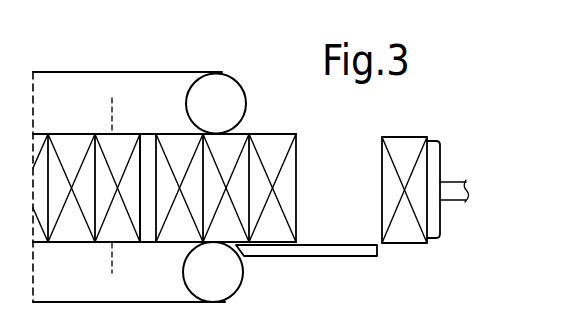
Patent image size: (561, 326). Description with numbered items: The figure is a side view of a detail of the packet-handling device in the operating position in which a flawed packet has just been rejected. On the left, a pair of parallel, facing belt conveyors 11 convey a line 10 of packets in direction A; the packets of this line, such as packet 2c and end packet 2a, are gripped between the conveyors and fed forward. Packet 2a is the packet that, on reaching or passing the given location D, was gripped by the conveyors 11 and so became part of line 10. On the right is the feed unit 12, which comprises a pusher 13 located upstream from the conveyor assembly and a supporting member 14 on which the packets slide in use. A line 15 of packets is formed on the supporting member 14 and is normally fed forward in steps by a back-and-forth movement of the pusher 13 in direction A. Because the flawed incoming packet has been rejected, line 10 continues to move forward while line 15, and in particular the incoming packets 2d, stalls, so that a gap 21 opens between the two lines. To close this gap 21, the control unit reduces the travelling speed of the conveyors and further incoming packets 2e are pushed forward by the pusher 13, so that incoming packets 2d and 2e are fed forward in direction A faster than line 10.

The line of packets 10 is at (58, 113).
The belt conveyors 11 is at (111, 80).
The given location D is at (110, 120).
The packet 2c is at (63, 243).
The end packet 2a is at (103, 243).
The gap 21 is at (143, 152).
The incoming packets 2d is at (276, 140).
The line of packets 15 is at (252, 113).
The supporting member 14 is at (345, 252).
The feed unit 12 is at (427, 136).
The incoming packets 2e is at (408, 138).
The pusher 13 is at (445, 165).